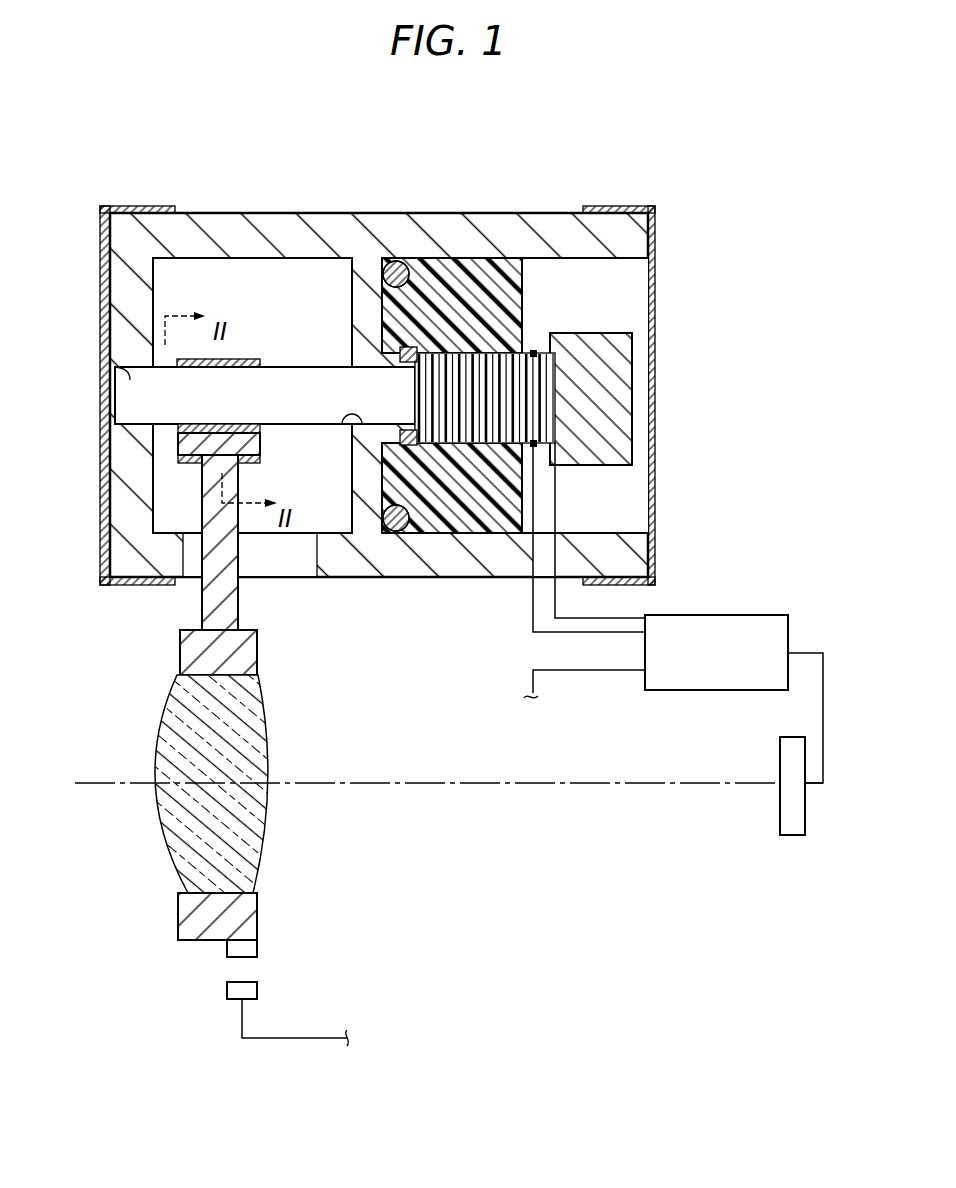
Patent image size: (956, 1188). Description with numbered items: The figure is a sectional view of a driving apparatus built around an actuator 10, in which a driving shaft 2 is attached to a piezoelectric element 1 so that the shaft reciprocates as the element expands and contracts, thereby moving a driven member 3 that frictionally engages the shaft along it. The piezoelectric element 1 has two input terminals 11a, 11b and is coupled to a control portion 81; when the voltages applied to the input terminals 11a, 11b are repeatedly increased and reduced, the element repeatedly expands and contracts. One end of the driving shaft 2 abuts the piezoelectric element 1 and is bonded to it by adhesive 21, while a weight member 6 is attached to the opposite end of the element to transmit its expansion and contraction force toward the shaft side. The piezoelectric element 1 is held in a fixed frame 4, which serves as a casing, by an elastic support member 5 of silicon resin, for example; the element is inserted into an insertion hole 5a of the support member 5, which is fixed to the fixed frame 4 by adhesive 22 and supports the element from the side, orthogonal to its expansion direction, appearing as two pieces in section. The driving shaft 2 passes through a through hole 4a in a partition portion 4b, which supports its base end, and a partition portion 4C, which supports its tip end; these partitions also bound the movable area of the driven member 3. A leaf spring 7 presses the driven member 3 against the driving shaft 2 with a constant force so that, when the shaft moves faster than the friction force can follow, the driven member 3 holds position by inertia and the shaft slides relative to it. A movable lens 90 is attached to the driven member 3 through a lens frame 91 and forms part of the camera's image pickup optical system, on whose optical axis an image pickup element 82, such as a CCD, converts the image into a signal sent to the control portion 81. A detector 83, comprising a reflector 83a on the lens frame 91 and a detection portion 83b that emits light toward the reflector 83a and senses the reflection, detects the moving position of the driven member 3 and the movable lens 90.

The piezoelectric element 1 is at (513, 352).
The driving shaft 2 is at (331, 380).
The driven member 3 is at (172, 437).
The fixed frame 4 is at (352, 360).
The through hole 4a is at (113, 385).
The partition portion 4b is at (346, 283).
The partition portion 4C is at (102, 280).
The support member 5 is at (496, 257).
The insertion hole 5a is at (492, 443).
The weight member 6 is at (620, 466).
The leaf spring 7 is at (190, 358).
The actuator 10 is at (352, 378).
The input terminal 11a is at (534, 352).
The input terminal 11b is at (534, 448).
The adhesive 21 is at (400, 352).
The adhesive 22 is at (392, 262).
The control portion 81 is at (720, 615).
The image pickup element 82 is at (795, 836).
The detector 83 is at (308, 991).
The reflector 83a is at (258, 948).
The detection portion 83b is at (258, 990).
The movable lens 90 is at (165, 697).
The lens frame 91 is at (180, 655).